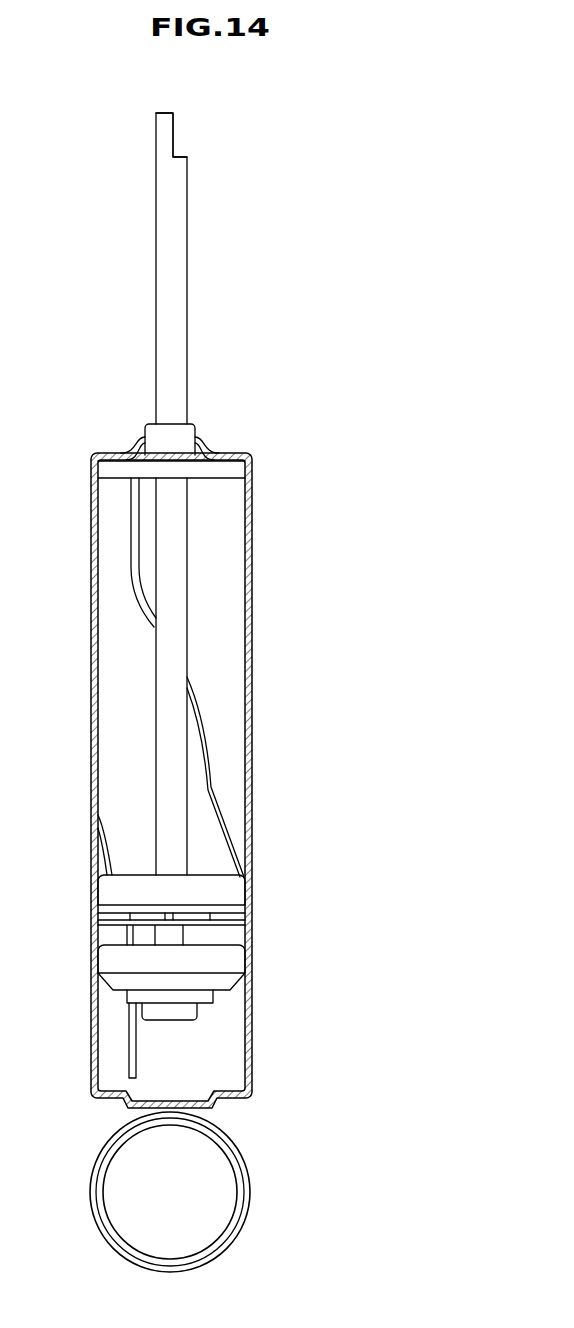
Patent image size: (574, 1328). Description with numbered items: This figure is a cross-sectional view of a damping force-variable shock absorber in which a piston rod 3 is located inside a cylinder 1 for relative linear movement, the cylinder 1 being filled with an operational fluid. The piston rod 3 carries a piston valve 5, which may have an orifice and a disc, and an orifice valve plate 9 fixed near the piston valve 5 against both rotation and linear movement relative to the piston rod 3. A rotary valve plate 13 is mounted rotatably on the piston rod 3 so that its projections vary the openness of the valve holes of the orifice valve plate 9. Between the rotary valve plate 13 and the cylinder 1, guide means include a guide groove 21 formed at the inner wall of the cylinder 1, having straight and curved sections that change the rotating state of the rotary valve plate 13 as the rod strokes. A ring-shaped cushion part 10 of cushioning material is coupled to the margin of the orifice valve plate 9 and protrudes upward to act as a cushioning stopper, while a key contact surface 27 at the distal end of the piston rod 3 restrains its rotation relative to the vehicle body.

The cylinder 1 is at (252, 537).
The piston rod 3 is at (187, 293).
The piston valve 5 is at (230, 960).
The orifice valve plate 9 is at (230, 912).
The cushion part 10 is at (207, 878).
The rotary valve plate 13 is at (230, 921).
The guide groove 21 is at (204, 705).
The key contact surface 27 is at (173, 137).